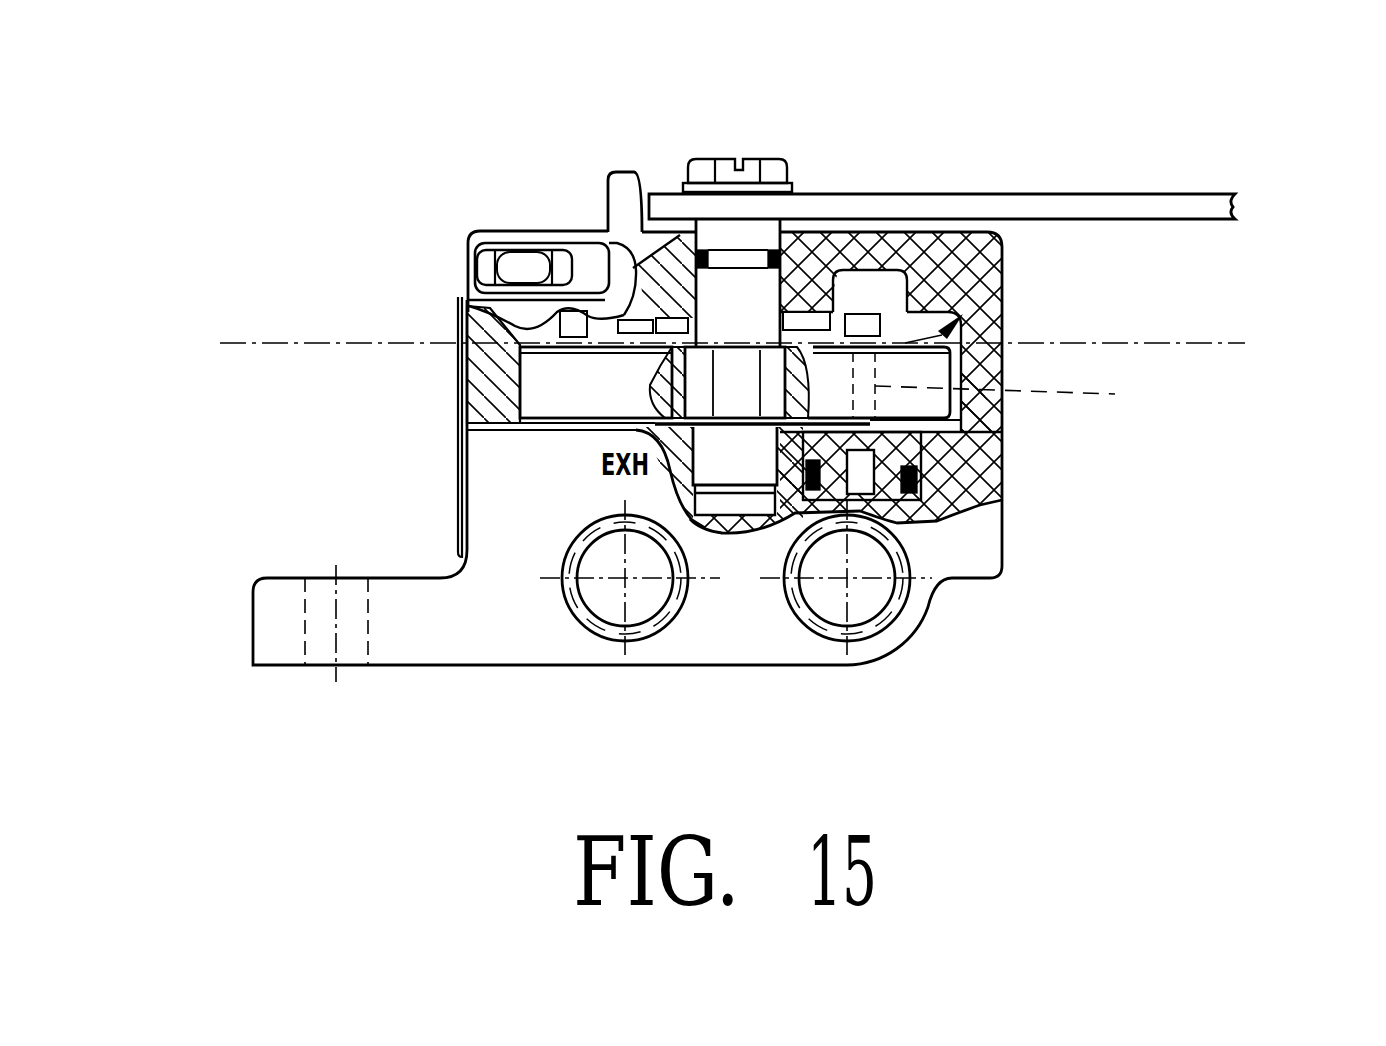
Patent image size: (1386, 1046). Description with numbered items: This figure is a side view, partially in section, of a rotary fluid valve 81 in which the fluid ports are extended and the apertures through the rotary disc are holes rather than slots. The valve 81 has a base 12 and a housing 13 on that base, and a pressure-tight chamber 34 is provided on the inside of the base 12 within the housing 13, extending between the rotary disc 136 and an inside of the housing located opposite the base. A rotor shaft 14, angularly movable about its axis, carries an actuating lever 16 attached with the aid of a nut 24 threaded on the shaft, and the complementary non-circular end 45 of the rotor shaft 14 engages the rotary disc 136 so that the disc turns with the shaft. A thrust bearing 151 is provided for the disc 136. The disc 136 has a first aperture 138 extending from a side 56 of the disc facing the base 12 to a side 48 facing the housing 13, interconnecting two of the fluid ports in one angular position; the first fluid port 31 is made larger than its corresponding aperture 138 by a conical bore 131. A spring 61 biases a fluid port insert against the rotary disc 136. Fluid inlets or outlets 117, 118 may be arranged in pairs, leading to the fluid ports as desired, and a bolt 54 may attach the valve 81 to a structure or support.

The base 12 is at (548, 521).
The housing 13 is at (1003, 316).
The rotor shaft 14 is at (768, 324).
The actuating lever 16 is at (1203, 197).
The nut 24 is at (733, 159).
The first fluid port 31 is at (905, 498).
The pressure-tight chamber 34 is at (515, 358).
The non-circular end of the rotor shaft 45 is at (722, 498).
The side of the disc facing the housing 48 is at (829, 320).
The bolt 54 is at (467, 266).
The side of the disc facing the base 56 is at (846, 539).
The spring 61 is at (937, 527).
The fluid valve 81 is at (448, 456).
The fluid inlet or outlet 117 is at (873, 600).
The fluid inlet or outlet 118 is at (610, 605).
The conical bore 131 is at (917, 447).
The rotary disc 136 is at (512, 405).
The first aperture 138 is at (1026, 404).
The thrust bearing 151 is at (856, 318).